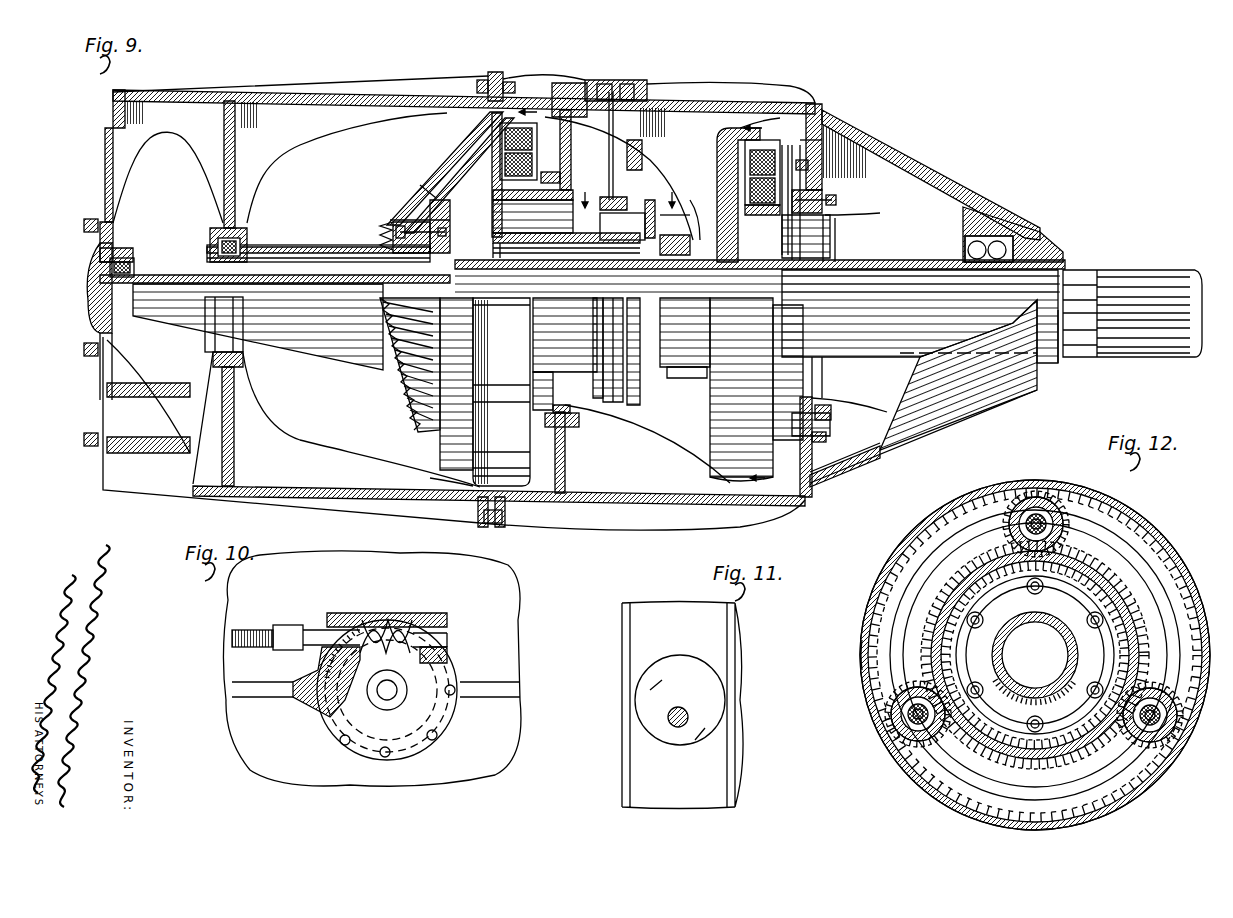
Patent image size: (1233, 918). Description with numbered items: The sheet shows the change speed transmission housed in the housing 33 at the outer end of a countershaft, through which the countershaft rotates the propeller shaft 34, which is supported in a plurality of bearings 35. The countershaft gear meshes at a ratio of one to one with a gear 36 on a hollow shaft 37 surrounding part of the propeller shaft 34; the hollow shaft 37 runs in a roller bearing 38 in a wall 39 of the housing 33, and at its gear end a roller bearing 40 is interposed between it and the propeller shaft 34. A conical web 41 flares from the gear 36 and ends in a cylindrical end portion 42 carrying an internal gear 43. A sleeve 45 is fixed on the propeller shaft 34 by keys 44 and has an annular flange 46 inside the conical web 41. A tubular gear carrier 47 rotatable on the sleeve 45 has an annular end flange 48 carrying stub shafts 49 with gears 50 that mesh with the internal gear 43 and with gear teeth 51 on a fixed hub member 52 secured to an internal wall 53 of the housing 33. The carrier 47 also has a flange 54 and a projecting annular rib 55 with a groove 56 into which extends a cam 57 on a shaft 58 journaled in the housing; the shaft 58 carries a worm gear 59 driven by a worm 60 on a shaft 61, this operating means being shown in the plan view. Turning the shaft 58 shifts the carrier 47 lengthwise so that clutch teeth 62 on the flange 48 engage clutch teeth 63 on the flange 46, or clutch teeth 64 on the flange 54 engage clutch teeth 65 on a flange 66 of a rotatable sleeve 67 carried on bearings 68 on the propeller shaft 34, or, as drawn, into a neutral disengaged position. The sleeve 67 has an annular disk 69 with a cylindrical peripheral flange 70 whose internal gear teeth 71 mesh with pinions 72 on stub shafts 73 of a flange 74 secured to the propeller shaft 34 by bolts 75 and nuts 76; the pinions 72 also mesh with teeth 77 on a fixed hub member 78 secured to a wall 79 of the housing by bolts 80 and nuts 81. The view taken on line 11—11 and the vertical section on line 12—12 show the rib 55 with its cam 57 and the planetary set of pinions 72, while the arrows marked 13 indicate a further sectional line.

In FIG. 9, the section line 11— 11 is at (627, 211).
In FIG. 12, the section line 11— 11 is at (1035, 655).
In FIG. 9, the section line 12— 12 is at (783, 300).
In FIG. 9, the housing flange joint 13 is at (528, 110).
In FIG. 9, the housing 33 is at (168, 492).
In FIG. 10, the housing 33 is at (268, 750).
In FIG. 9, the propeller shaft 34 is at (160, 276).
In FIG. 12, the propeller shaft 34 is at (1017, 620).
In FIG. 9, the bearings 35 is at (988, 235).
In FIG. 9, the gear 36 is at (400, 222).
In FIG. 9, the hollow shaft 37 is at (284, 262).
In FIG. 9, the roller bearing 38 is at (225, 235).
In FIG. 9, the wall 39 is at (238, 400).
In FIG. 9, the roller bearing 40 is at (456, 384).
In FIG. 9, the conical web 41 is at (470, 430).
In FIG. 9, the cylindrical end portion 42 is at (506, 524).
In FIG. 9, the internal gear 43 is at (487, 135).
In FIG. 9, the keys 44 is at (498, 326).
In FIG. 9, the sleeve 45 is at (566, 316).
In FIG. 9, the annular flange 46 is at (430, 215).
In FIG. 9, the tubular gear carrier 47 is at (583, 255).
In FIG. 9, the annular end flange 48 is at (490, 157).
In FIG. 9, the stub shafts 49 is at (500, 145).
In FIG. 9, the gear 50 is at (423, 190).
In FIG. 9, the gear teeth 51 is at (533, 211).
In FIG. 9, the fixed hub member 52 is at (571, 150).
In FIG. 9, the internal wall 53 is at (558, 170).
In FIG. 9, the flange 54 is at (652, 200).
In FIG. 9, the annular rib 55 is at (612, 250).
In FIG. 11, the annular rib 55 is at (622, 664).
In FIG. 9, the groove 56 is at (642, 165).
In FIG. 11, the groove 56 is at (720, 760).
In FIG. 9, the cam 57 is at (634, 146).
In FIG. 11, the cam 57 is at (710, 680).
In FIG. 9, the shaft 58 is at (609, 128).
In FIG. 10, the shaft 58 is at (392, 693).
In FIG. 11, the shaft 58 is at (668, 719).
In FIG. 9, the worm gear 59 is at (622, 80).
In FIG. 10, the worm gear 59 is at (355, 667).
In FIG. 10, the worm 60 is at (400, 615).
In FIG. 10, the worm shaft 61 is at (317, 627).
In FIG. 9, the clutch teeth 62 is at (498, 247).
In FIG. 9, the clutch teeth 63 is at (396, 232).
In FIG. 9, the clutch teeth 64 is at (684, 214).
In FIG. 9, the clutch teeth 65 is at (686, 234).
In FIG. 9, the flange 66 is at (697, 198).
In FIG. 9, the rotatable sleeve 67 is at (703, 252).
In FIG. 9, the bearings 68 is at (670, 258).
In FIG. 9, the annular disk 69 is at (717, 152).
In FIG. 12, the annular disk 69 is at (895, 559).
In FIG. 9, the cylindrical peripheral flange 70 is at (747, 127).
In FIG. 12, the cylindrical peripheral flange 70 is at (1023, 481).
In FIG. 9, the internal gear teeth 71 is at (768, 140).
In FIG. 12, the internal gear teeth 71 is at (864, 640).
In FIG. 9, the pinions 72 is at (824, 140).
In FIG. 12, the pinions 72 is at (1070, 517).
In FIG. 9, the stub shafts 73 is at (810, 170).
In FIG. 12, the stub shafts 73 is at (1040, 520).
In FIG. 9, the flange 74 is at (745, 185).
In FIG. 12, the flange 74 is at (903, 600).
In FIG. 9, the bolts 75 is at (812, 237).
In FIG. 12, the bolts 75 is at (1028, 588).
In FIG. 9, the nuts 76 is at (782, 235).
In FIG. 12, the nuts 76 is at (1028, 720).
In FIG. 9, the teeth 77 is at (802, 183).
In FIG. 12, the teeth 77 is at (1117, 575).
In FIG. 9, the fixed hub member 78 is at (824, 212).
In FIG. 12, the fixed hub member 78 is at (1122, 603).
In FIG. 9, the wall 79 is at (870, 162).
In FIG. 9, the bolts 80 is at (882, 203).
In FIG. 9, the nuts 81 is at (837, 200).